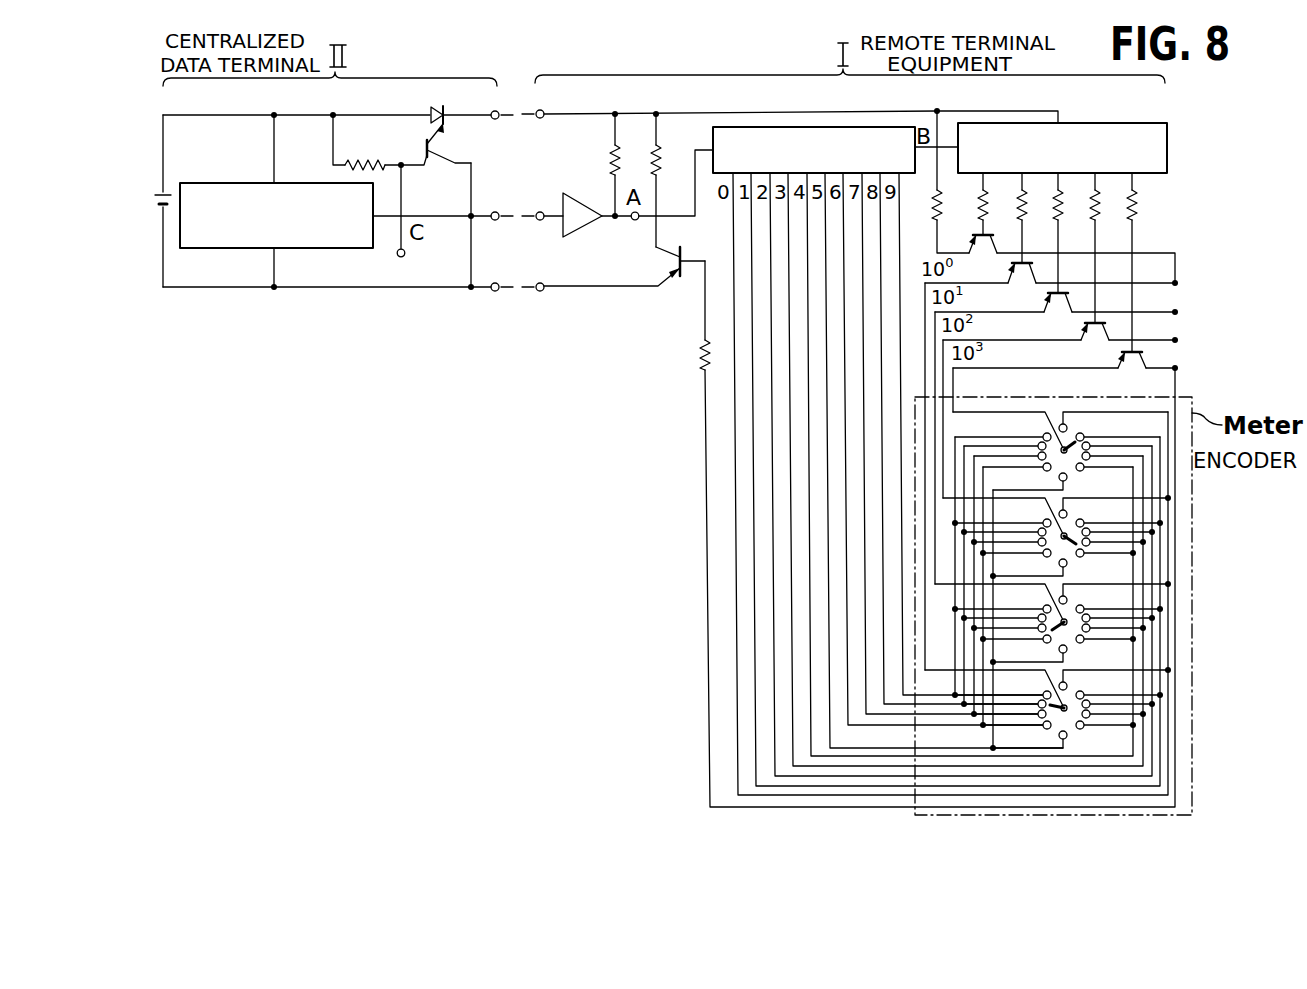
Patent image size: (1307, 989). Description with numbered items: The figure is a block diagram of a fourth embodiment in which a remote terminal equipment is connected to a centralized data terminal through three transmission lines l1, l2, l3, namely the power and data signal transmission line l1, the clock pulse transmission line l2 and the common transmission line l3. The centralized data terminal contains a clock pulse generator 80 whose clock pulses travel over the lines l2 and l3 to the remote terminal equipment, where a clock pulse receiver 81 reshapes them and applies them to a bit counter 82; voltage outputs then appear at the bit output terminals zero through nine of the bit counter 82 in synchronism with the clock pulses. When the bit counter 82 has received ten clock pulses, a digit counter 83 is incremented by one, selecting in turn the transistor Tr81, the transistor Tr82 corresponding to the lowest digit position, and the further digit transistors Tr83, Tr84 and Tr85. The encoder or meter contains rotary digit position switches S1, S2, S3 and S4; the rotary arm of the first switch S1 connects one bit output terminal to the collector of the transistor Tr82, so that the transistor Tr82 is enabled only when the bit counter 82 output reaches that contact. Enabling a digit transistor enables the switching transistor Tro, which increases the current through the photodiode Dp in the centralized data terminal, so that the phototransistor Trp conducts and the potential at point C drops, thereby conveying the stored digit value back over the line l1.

The clock pulse generator 80 is at (232, 183).
The clock pulse receiver 81 is at (582, 194).
The bit counter 82 is at (713, 150).
The digit counter 83 is at (1168, 142).
The photodiode Dp is at (429, 112).
The phototransistor Trp is at (425, 153).
The switching transistor Tro is at (666, 263).
The transistor Tr81 is at (983, 242).
The transistor Tr82 is at (1020, 272).
The transistor Tr83 is at (1056, 300).
The transistor Tr84 is at (1093, 328).
The transistor Tr85 is at (1130, 356).
The first switch S1 is at (1068, 720).
The switch S2 is at (1068, 634).
The switch S3 is at (1068, 548).
The switch S4 is at (1068, 462).
The power and data signal transmission line l1 is at (517, 102).
The clock pulse transmission line l2 is at (517, 204).
The common transmission line l3 is at (517, 275).